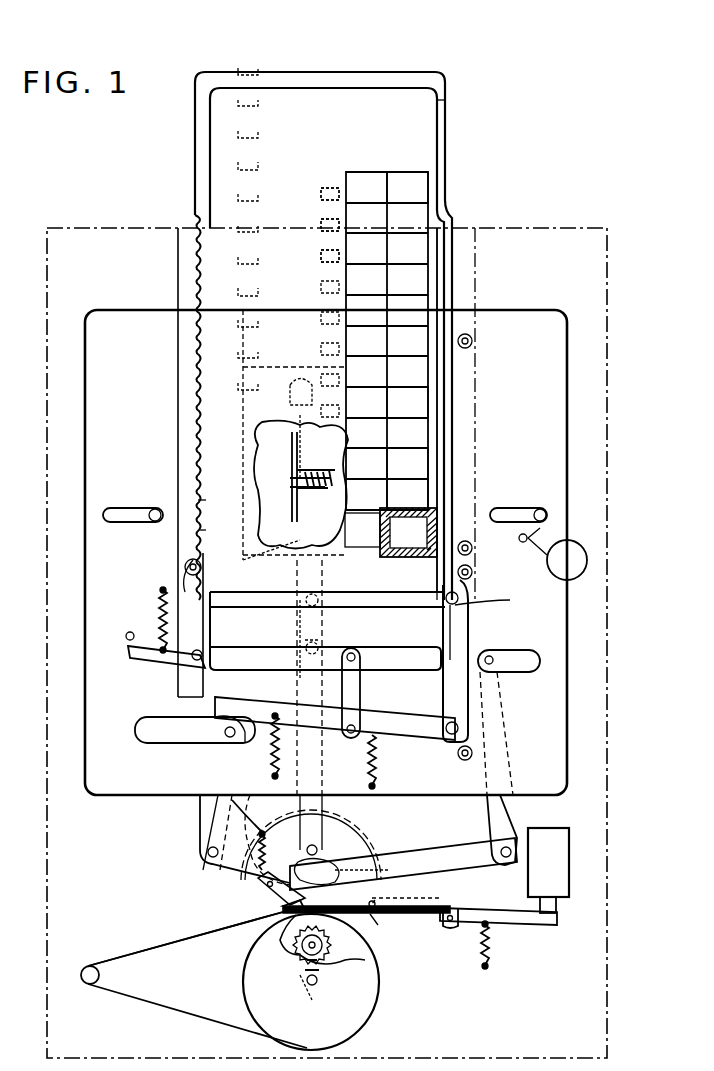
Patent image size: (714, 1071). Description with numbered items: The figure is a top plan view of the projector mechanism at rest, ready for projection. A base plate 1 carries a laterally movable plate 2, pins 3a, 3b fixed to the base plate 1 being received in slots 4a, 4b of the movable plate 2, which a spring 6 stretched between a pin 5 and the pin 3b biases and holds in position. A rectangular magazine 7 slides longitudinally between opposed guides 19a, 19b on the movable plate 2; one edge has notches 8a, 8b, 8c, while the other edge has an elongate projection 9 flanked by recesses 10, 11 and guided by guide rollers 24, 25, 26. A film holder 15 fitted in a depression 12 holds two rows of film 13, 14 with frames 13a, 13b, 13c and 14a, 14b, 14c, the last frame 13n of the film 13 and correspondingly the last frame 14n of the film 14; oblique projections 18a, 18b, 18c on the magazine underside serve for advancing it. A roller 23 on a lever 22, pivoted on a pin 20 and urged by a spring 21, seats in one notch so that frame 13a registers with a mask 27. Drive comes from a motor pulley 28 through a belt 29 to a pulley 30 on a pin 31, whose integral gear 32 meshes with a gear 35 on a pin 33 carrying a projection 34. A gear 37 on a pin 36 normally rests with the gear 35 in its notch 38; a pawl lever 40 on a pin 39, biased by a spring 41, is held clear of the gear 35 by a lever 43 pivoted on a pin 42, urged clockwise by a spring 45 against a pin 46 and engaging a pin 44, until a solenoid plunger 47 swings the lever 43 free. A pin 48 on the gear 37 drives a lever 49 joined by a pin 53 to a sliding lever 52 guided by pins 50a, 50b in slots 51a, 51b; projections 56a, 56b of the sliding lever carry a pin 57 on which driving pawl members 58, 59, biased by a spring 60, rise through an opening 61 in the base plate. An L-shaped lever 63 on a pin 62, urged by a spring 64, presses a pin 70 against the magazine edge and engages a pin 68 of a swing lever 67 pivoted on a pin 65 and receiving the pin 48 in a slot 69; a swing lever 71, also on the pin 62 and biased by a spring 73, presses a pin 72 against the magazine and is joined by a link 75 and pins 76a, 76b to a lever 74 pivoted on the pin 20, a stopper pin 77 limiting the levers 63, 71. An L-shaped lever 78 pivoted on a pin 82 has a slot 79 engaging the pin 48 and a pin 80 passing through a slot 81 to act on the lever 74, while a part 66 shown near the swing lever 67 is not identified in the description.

The base plate 1 is at (605, 240).
The movable plate 2 is at (567, 341).
The pin 3a is at (152, 521).
The pin 3b is at (546, 515).
The slot 4a is at (103, 512).
The slot 4b is at (547, 508).
The pin 5 is at (524, 555).
The spring 6 is at (587, 560).
The magazine 7 is at (397, 78).
The notch 8a is at (201, 567).
The notch 8b is at (218, 523).
The notch 8c is at (198, 500).
The elongate projection 9 is at (448, 422).
The recessed portion 10 is at (450, 596).
The recessed portion 11 is at (450, 200).
The depression 12 is at (328, 86).
The film 13 is at (428, 215).
The frame 13a is at (455, 510).
The frame 13b is at (422, 462).
The frame 13c is at (425, 410).
The last frame 13n is at (410, 170).
The film 14 is at (350, 172).
The frame 14a is at (330, 188).
The frame 14b is at (330, 222).
The frame 14c is at (330, 252).
The index marker 14n is at (318, 596).
The film holder 15 is at (442, 100).
The oblique projection 18a is at (242, 72).
The oblique projection 18b is at (240, 108).
The oblique projection 18c is at (240, 138).
The guide 19a is at (178, 262).
The guide 19b is at (475, 258).
The pin 20 is at (197, 670).
The spring 21 is at (160, 622).
The lever 22 is at (163, 590).
The roller 23 is at (185, 575).
The guide roller 24 is at (472, 342).
The guide roller 25 is at (481, 580).
The guide roller 26 is at (456, 764).
The mask 27 is at (437, 520).
The motor pulley 28 is at (99, 978).
The belt 29 is at (180, 1018).
The pulley 30 is at (355, 1030).
The pin 31 is at (305, 1010).
The gear 32 is at (322, 975).
The pin 33 is at (296, 950).
The projection 34 is at (366, 960).
The gear 35 is at (296, 975).
The pin 36 is at (368, 822).
The gear 37 is at (200, 840).
The notch 38 is at (374, 898).
The pin 39 is at (255, 886).
The pawl lever 40 is at (270, 908).
The spring 41 is at (215, 800).
The pin 42 is at (445, 928).
The lever 43 is at (440, 905).
The pin 44 is at (315, 906).
The spring 45 is at (490, 945).
The pin 46 is at (388, 922).
The solenoid plunger 47 is at (556, 866).
The pin 48 is at (317, 850).
The lever 49 is at (325, 822).
The pin 50a is at (300, 390).
The pin 50b is at (337, 624).
The slot 51a is at (300, 410).
The slot 51b is at (300, 620).
The sliding lever 52 is at (325, 676).
The pin 53 is at (300, 688).
The projection 56a is at (290, 470).
The projection 56b is at (290, 487).
The pin 57 is at (296, 477).
The driving pawl member 58 is at (362, 530).
The driving pawl member 59 is at (262, 436).
The spring 60 is at (300, 555).
The opening 61 is at (243, 373).
The pin 62 is at (458, 728).
The L-shaped lever 63 is at (380, 708).
The spring 64 is at (257, 748).
The pin 65 is at (208, 857).
The spring 66 is at (290, 860).
The swing lever 67 is at (210, 812).
The pin 68 is at (228, 738).
The slot 69 is at (142, 720).
The pin 70 is at (483, 546).
The swing lever 71 is at (470, 620).
The pin 72 is at (448, 603).
The spring 73 is at (377, 762).
The lever 74 is at (228, 652).
The link 75 is at (365, 693).
The pin 76a is at (355, 657).
The pin 76b is at (351, 733).
The stopper pin 77 is at (497, 604).
The L-shaped lever 78 is at (510, 816).
The slot 79 is at (385, 866).
The pin 80 is at (493, 657).
The slot 81 is at (540, 662).
The pin 82 is at (503, 847).